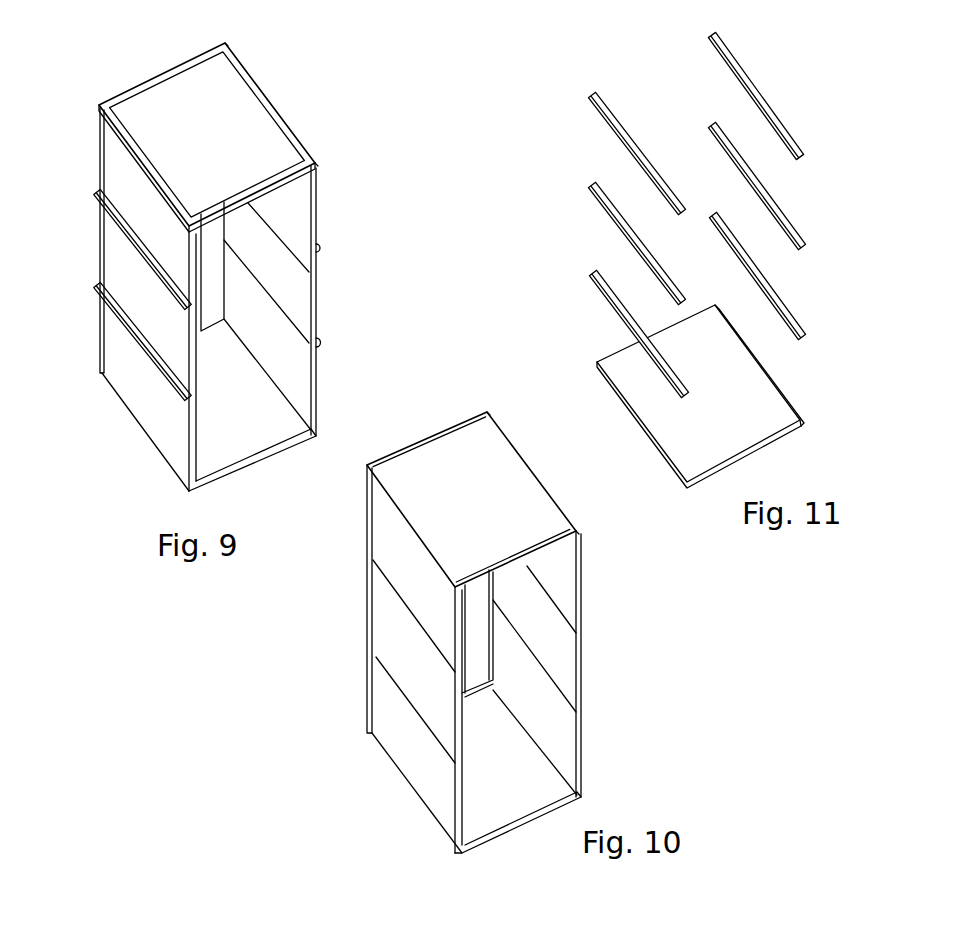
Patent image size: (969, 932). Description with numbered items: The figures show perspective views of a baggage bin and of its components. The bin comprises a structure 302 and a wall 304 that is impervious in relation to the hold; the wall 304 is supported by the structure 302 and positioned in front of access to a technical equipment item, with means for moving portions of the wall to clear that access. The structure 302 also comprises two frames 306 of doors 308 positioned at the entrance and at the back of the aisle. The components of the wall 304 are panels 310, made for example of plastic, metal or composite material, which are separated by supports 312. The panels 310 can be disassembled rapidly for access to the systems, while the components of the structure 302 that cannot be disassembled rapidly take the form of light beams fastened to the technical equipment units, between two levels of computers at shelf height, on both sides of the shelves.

In FIG. 9, the structure 302 is at (157, 62).
In FIG. 9, the wall 304 is at (84, 265).
In FIG. 10, the wall 304 is at (403, 637).
In FIG. 9, the frame 306 is at (188, 453).
In FIG. 9, the door 308 is at (208, 250).
In FIG. 9, the panel 310 is at (157, 230).
In FIG. 11, the panel 310 is at (683, 435).
In FIG. 11, the support 312 is at (607, 220).